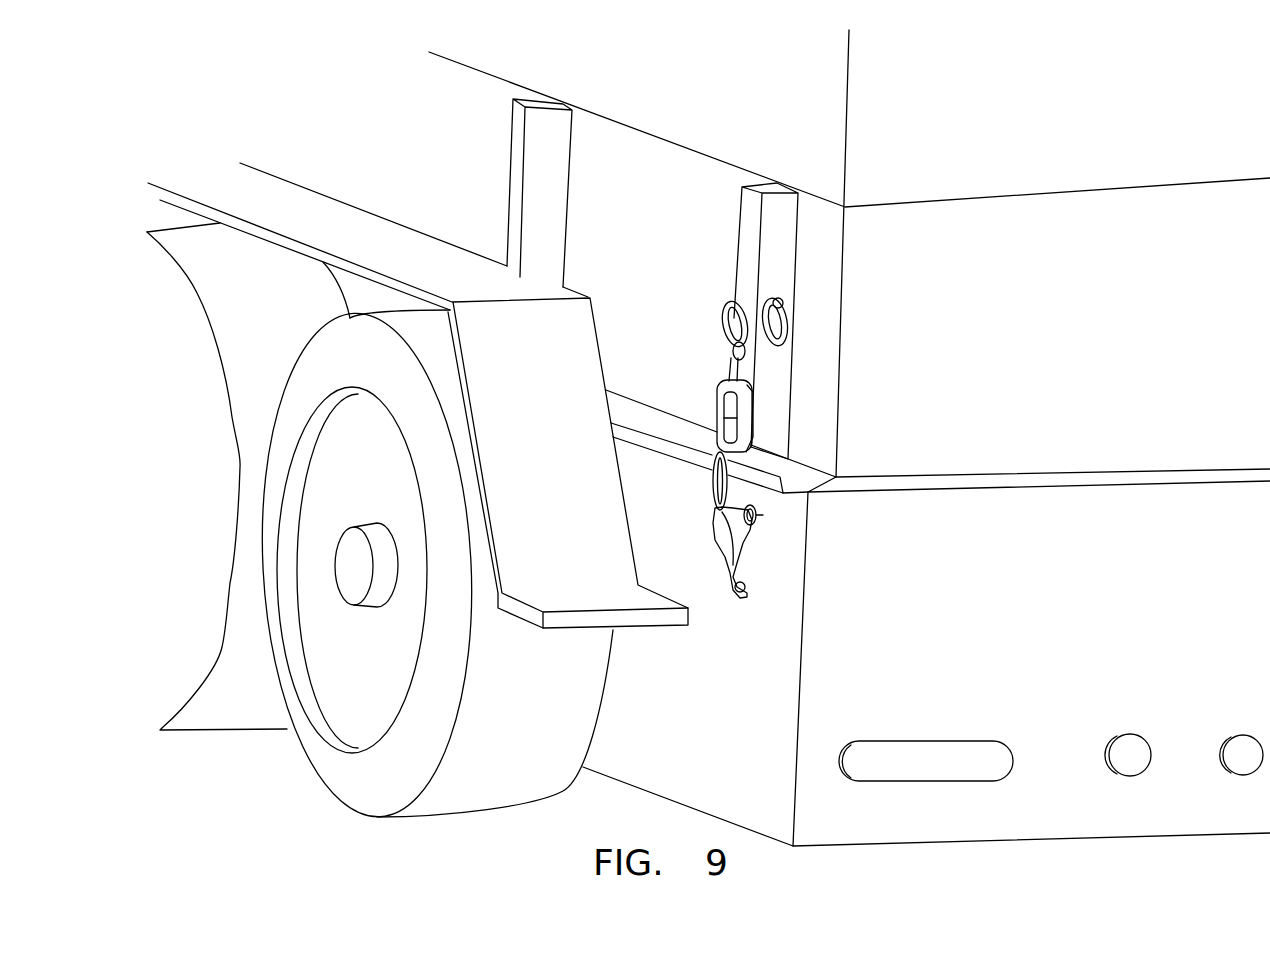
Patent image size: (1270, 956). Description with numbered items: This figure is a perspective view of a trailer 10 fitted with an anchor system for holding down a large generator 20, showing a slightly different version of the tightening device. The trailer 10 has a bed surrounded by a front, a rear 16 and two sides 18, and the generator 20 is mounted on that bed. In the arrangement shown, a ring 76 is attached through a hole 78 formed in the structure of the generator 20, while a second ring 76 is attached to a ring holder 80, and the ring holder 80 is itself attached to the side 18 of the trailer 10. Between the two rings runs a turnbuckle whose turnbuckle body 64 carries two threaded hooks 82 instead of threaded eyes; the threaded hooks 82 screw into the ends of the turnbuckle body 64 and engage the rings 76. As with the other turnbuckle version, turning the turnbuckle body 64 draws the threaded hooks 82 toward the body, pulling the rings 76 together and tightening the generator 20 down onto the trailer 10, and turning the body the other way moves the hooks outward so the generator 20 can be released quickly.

The trailer 10 is at (584, 814).
The rear 16 is at (967, 634).
The side 18 is at (692, 726).
The generator 20 is at (944, 170).
The turnbuckle body 64 is at (750, 417).
The ring 76 is at (777, 337).
The hole 78 is at (785, 303).
The ring holder 80 is at (758, 517).
The threaded hook 82 is at (718, 364).